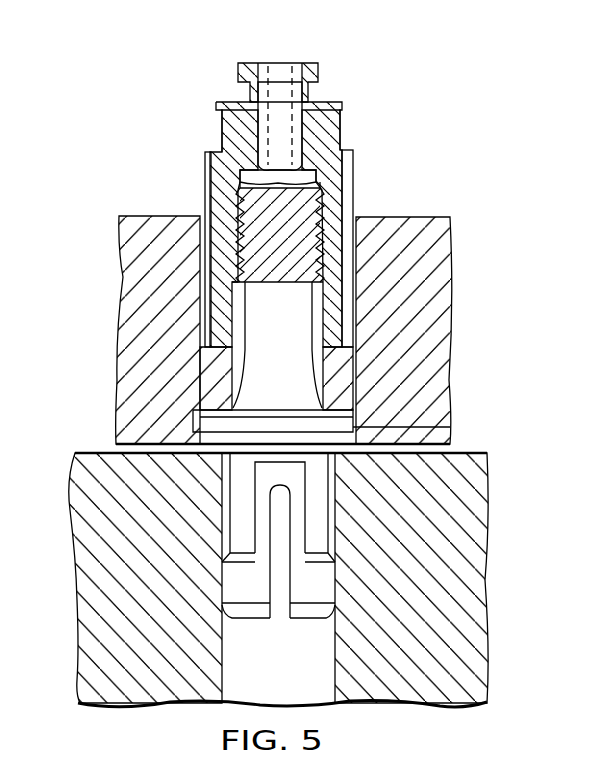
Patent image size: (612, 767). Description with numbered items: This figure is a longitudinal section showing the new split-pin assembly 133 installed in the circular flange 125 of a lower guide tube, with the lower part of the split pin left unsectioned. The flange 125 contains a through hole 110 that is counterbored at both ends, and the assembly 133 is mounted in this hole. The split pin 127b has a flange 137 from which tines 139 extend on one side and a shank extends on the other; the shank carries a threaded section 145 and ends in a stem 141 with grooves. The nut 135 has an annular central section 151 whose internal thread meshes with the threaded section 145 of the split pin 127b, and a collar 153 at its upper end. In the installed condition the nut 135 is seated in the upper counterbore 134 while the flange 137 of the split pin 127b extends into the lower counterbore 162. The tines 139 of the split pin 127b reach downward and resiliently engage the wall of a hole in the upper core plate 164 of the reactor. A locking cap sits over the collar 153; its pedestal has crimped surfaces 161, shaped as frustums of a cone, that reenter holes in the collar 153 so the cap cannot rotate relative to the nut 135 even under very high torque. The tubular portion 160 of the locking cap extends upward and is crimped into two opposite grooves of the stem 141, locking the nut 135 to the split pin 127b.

The through hole 110 is at (367, 340).
The circular flange 125 is at (147, 287).
The split pin 127b is at (290, 387).
The split-pin assembly 133 is at (97, 419).
The upper counterbore 134 is at (340, 273).
The nut 135 is at (222, 250).
The flange of the split pin 137 is at (337, 425).
The tines 139 is at (242, 528).
The stem 141 is at (272, 63).
The threaded section 145 is at (267, 217).
The annular central section 151 is at (377, 267).
The collar 153 is at (240, 135).
The tubular portion 160 is at (295, 63).
The crimped surfaces 161 is at (230, 117).
The lower counterbore 162 is at (197, 430).
The upper core plate 164 is at (443, 595).